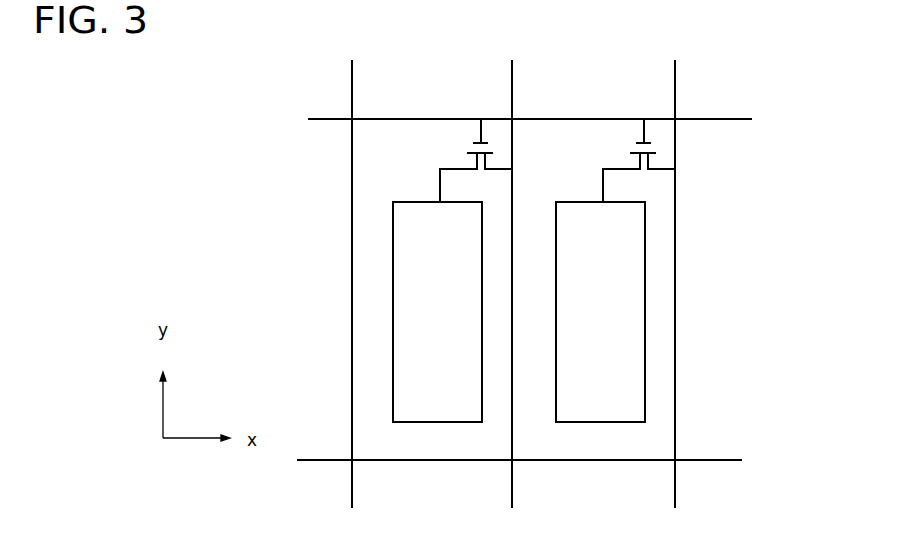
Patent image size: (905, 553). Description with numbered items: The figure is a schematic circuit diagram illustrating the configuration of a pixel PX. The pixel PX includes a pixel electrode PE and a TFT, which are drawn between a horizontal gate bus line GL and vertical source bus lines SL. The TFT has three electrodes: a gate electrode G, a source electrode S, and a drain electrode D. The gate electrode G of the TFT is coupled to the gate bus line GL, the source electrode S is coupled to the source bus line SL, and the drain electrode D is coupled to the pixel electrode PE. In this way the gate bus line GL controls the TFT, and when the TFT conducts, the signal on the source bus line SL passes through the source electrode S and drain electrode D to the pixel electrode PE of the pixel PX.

The pixel PX is at (573, 141).
The gate bus line GL is at (612, 119).
The source bus line SL is at (675, 388).
The element TFT is at (689, 160).
The gate electrode G is at (636, 132).
The drain electrode D is at (621, 177).
The source electrode S is at (662, 147).
The pixel electrode PE is at (645, 300).